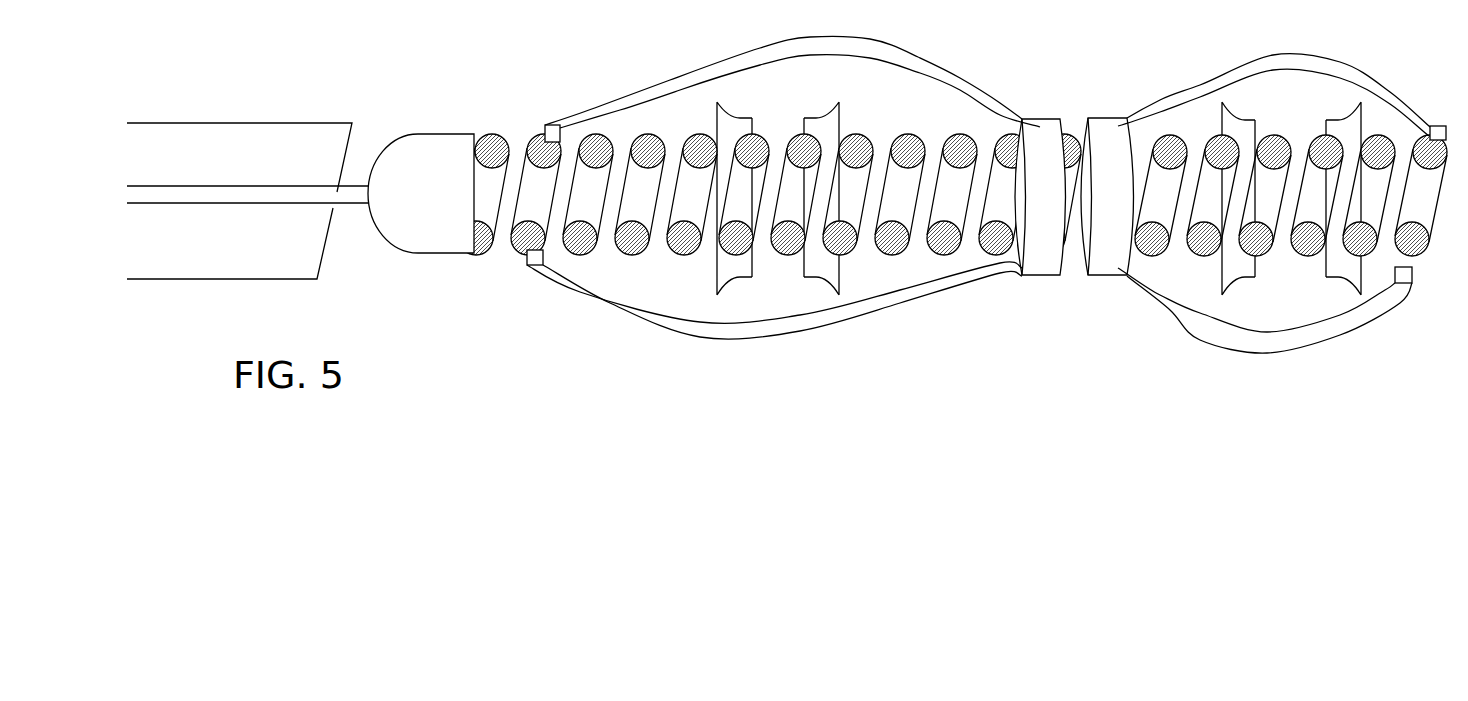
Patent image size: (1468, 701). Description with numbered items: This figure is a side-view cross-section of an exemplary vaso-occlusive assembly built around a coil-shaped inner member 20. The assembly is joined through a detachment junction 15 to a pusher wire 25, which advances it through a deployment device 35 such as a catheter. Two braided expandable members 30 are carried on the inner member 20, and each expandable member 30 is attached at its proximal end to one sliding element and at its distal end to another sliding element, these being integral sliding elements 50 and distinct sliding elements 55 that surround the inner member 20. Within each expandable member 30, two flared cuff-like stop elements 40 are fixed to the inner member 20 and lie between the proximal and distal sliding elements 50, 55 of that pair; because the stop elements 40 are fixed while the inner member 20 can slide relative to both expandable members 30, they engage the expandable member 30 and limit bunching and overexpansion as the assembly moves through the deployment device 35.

The detachment junction 15 is at (368, 203).
The inner member 20 is at (497, 133).
The pusher wire 25 is at (353, 187).
The expandable member 30 is at (733, 67).
The deployment device 35 is at (282, 122).
The stop element 40 is at (804, 293).
The integral sliding element 50 is at (527, 263).
The distinct sliding element 55 is at (1025, 135).